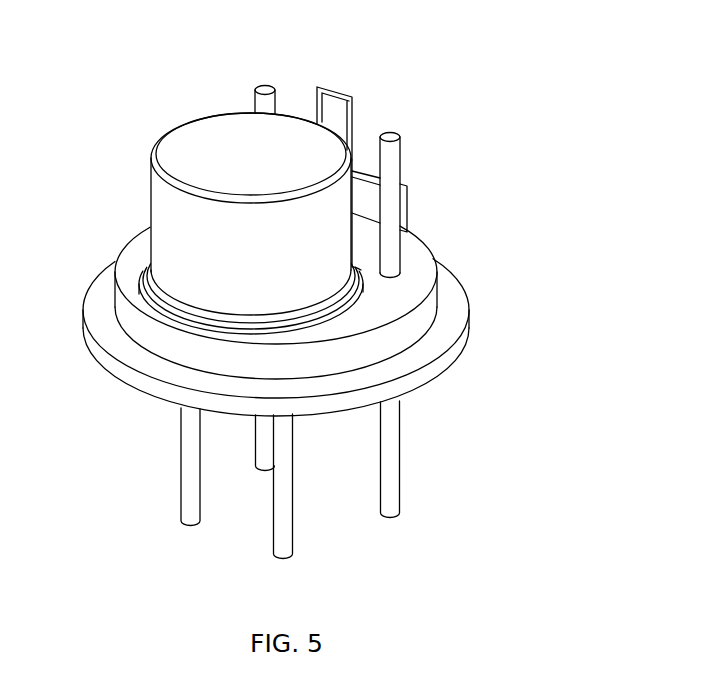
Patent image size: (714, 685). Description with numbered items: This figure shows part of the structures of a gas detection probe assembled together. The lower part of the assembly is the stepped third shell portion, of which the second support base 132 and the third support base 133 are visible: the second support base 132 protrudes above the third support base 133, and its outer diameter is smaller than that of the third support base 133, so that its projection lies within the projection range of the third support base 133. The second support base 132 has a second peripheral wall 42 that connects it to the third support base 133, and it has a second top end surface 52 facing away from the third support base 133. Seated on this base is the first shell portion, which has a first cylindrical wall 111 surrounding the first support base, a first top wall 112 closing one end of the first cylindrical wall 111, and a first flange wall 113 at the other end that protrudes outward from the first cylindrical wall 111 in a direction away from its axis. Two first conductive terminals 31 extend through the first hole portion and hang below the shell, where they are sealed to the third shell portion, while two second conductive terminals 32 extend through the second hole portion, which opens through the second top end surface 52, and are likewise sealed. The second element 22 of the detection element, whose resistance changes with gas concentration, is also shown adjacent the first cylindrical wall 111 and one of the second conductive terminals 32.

The first cylindrical wall 111 is at (172, 222).
The first top wall 112 is at (198, 160).
The first flange wall 113 is at (150, 287).
The second element 22 is at (338, 103).
The first conductive terminals 31 is at (185, 466).
The second conductive terminals 32 is at (263, 103).
The second peripheral wall 42 is at (412, 335).
The second top end surface 52 is at (412, 283).
The second support base 132 is at (148, 338).
The third support base 133 is at (418, 380).